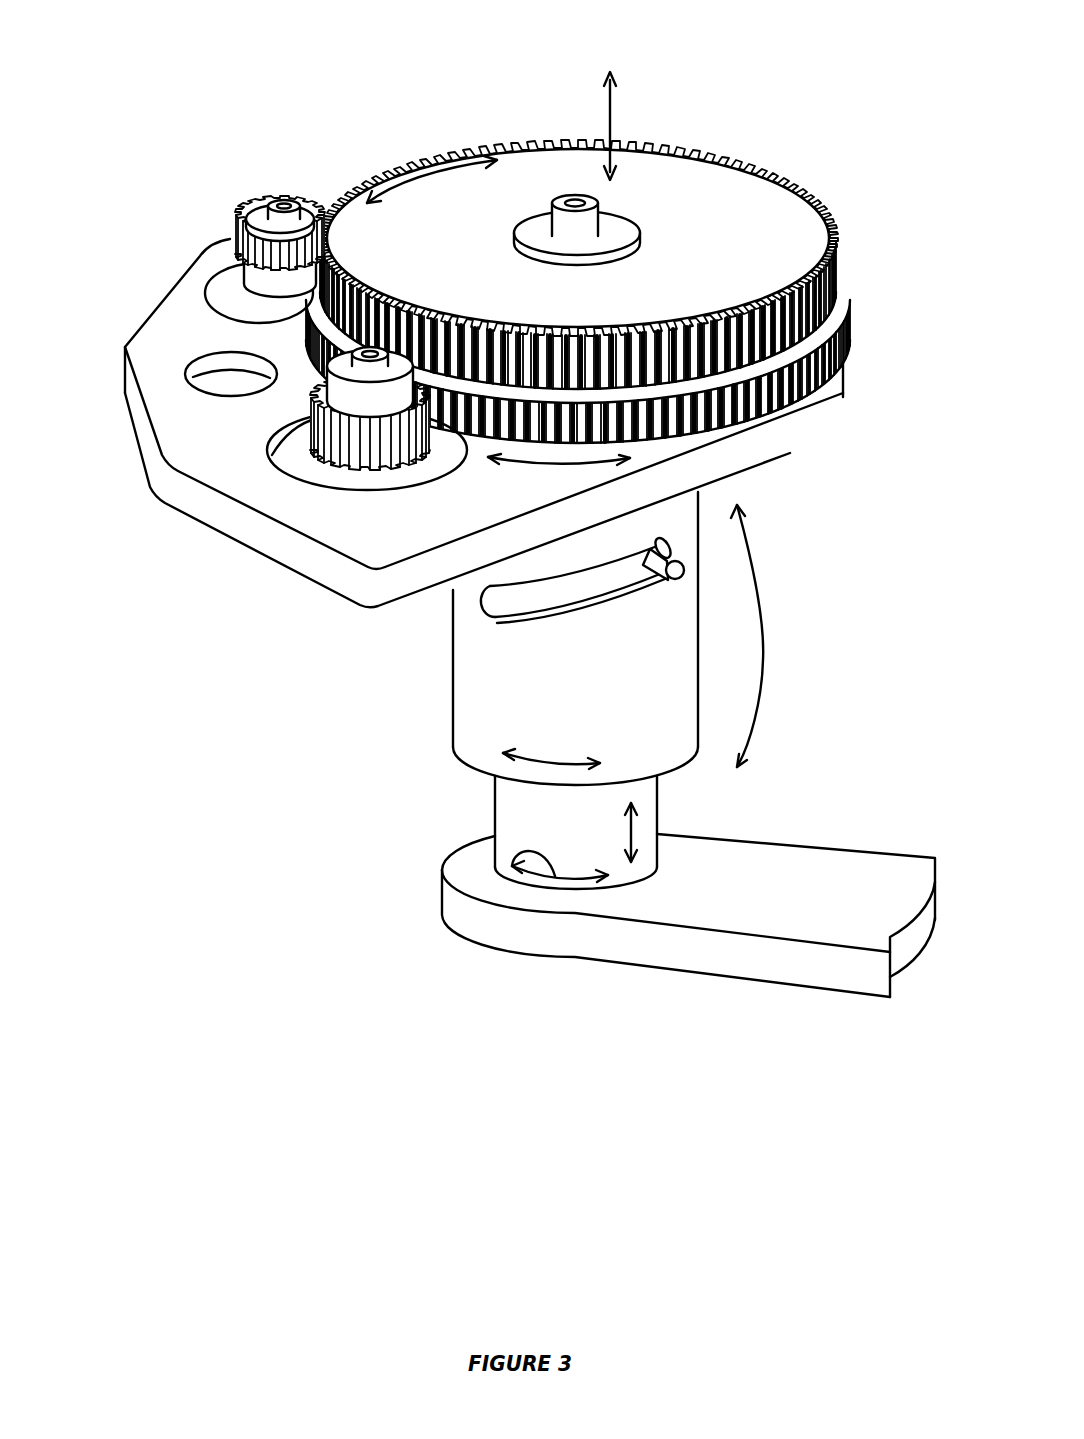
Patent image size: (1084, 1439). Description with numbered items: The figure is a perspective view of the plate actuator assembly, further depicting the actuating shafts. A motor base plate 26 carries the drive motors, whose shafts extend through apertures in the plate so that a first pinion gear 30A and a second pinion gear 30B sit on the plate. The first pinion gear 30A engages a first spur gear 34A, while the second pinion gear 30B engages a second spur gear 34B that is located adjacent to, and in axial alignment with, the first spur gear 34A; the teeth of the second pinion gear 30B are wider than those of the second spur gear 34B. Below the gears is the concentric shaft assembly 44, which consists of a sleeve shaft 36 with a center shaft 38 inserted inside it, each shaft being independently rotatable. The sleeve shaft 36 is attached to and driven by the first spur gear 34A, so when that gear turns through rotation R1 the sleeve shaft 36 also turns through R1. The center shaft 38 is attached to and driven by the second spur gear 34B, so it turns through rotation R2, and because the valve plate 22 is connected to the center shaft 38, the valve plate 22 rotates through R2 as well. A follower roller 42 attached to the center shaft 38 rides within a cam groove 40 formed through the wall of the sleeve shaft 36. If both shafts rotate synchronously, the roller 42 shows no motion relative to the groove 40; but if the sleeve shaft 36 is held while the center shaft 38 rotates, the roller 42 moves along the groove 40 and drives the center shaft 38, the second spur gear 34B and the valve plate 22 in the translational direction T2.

The valve plate 22 is at (588, 942).
The motor base plate 26 is at (160, 474).
The first pinion gear 30A is at (327, 457).
The second pinion gear 30B is at (262, 213).
The first spur gear 34A is at (798, 400).
The second spur gear 34B is at (775, 210).
The sleeve shaft 36 is at (470, 740).
The center shaft 38 is at (520, 807).
The cam groove 40 is at (600, 610).
The follower roller 42 is at (683, 577).
The concentric shaft assembly 44 is at (768, 640).
The translational movement direction T2 is at (612, 123).
The rotation R1 is at (553, 463).
The rotation R2 is at (420, 180).